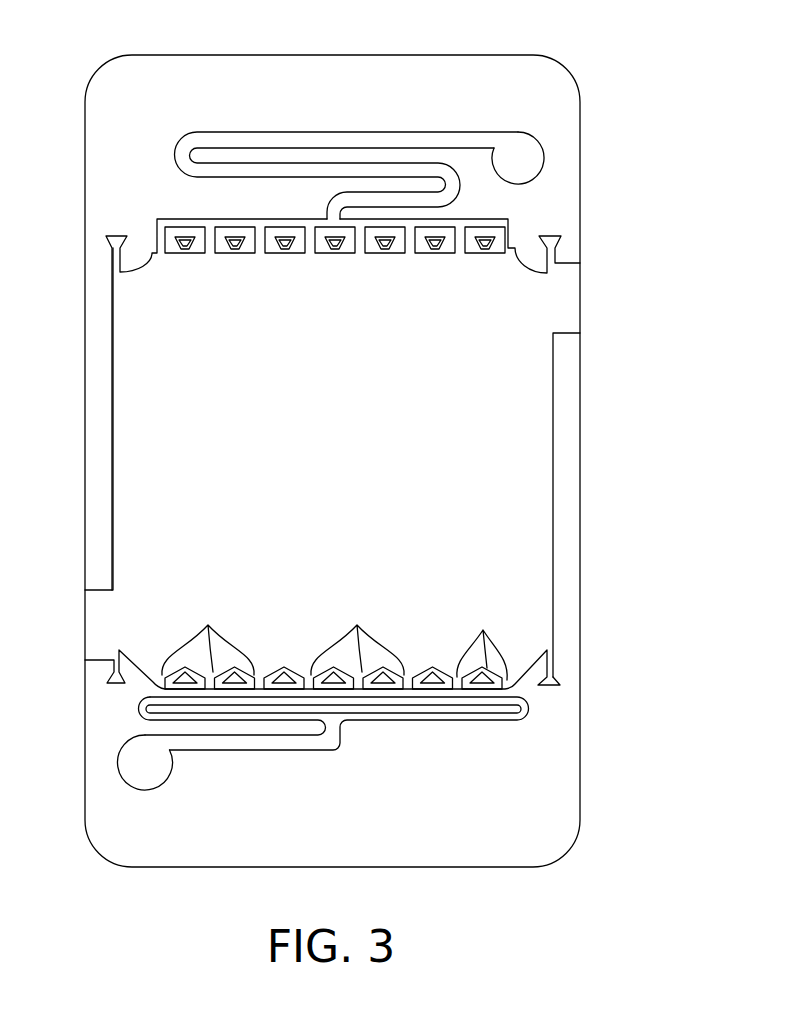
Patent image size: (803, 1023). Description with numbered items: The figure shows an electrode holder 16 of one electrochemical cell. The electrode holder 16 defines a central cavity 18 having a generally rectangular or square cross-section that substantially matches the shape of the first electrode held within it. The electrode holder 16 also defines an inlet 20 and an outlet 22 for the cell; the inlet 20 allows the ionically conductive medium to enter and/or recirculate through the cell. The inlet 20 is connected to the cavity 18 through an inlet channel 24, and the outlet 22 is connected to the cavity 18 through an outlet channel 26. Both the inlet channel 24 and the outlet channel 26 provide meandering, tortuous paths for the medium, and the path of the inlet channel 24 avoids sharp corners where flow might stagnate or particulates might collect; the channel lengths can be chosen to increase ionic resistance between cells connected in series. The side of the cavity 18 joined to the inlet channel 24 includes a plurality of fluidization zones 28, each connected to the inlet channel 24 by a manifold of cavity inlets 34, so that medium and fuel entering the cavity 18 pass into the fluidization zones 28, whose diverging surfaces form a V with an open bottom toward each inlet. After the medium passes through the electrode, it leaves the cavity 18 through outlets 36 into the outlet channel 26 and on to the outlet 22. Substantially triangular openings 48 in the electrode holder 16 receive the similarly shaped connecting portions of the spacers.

The electrode holder 16 is at (103, 117).
The cavity 18 is at (328, 464).
The inlet 20 is at (133, 758).
The outlet 22 is at (537, 163).
The inlet channel 24 is at (330, 742).
The outlet channel 26 is at (285, 140).
The fluidization zones 28 is at (208, 626).
The cavity inlets 34 is at (455, 687).
The outlets 36 is at (508, 248).
The openings 48 is at (237, 243).